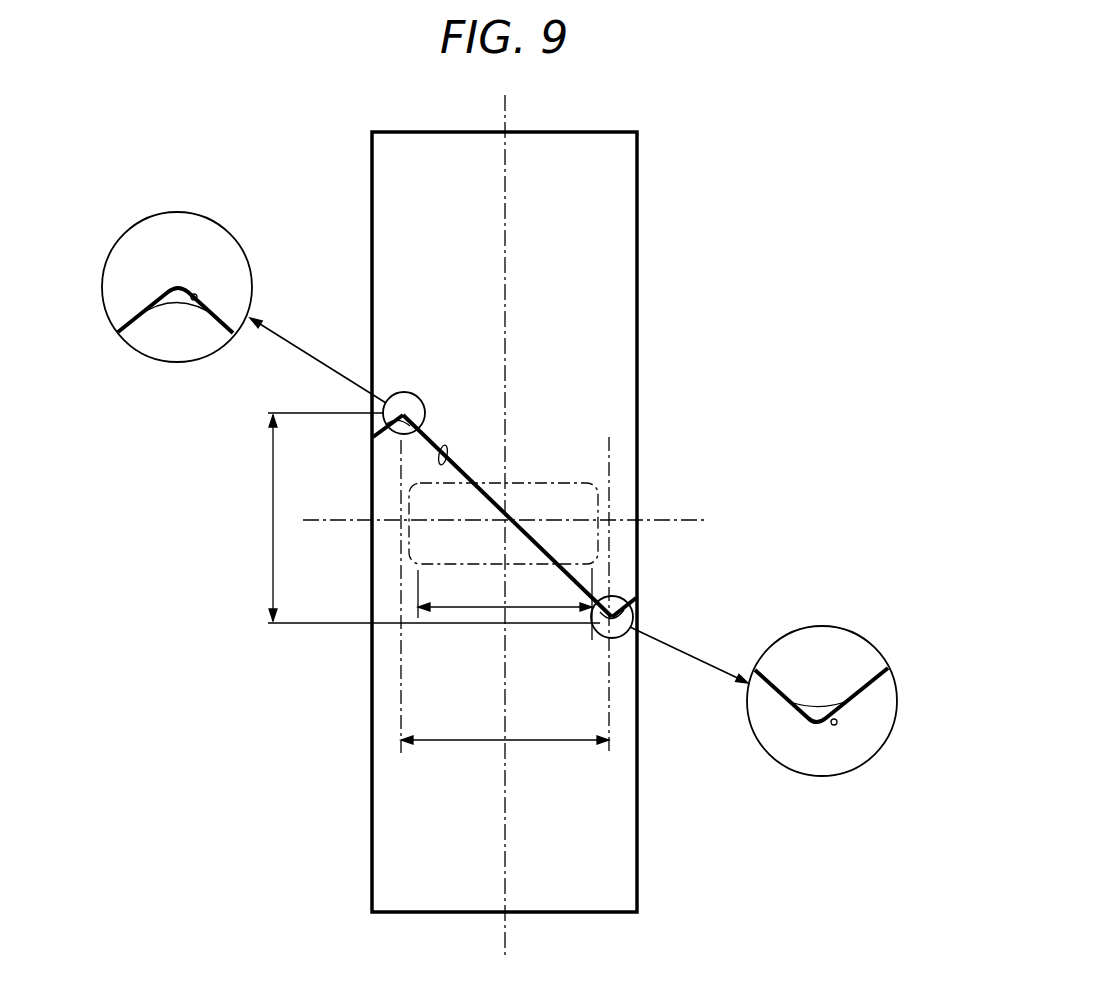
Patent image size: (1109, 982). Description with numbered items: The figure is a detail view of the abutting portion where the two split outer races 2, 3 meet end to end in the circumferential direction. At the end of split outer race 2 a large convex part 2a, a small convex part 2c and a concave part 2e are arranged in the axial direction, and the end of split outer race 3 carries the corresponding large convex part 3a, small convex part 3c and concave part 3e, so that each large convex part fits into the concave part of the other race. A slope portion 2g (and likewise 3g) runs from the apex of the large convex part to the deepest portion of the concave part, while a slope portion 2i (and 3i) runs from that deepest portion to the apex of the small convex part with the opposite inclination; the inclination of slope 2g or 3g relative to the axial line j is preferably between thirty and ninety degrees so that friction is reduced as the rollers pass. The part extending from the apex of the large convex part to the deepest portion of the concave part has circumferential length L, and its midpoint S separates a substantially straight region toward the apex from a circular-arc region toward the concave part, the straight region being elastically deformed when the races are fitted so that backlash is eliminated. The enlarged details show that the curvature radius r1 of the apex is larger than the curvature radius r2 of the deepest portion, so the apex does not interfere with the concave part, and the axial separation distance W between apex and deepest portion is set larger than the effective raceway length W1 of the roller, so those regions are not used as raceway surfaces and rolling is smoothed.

The split outer race 2 is at (649, 827).
The split outer race 3 is at (649, 237).
The large convex part 2a is at (383, 430).
The small convex part 2c is at (634, 620).
The concave part 2e is at (613, 612).
The slope portion 2g is at (542, 553).
The slope portion 2i is at (630, 603).
The large convex part 3a is at (602, 622).
The small convex part 3c is at (386, 405).
The concave part 3e is at (403, 410).
The slope portion 3g is at (447, 445).
The slope portion 3i is at (392, 397).
The midpoint S is at (508, 518).
The line extending along the axial direction j is at (688, 518).
The circumferential length L is at (424, 518).
The axial separation distance W is at (505, 595).
The effective raceway length W1 is at (505, 604).
The curvature radius of apex portion r1 is at (187, 308).
The curvature radius of deepest portion r2 is at (178, 292).